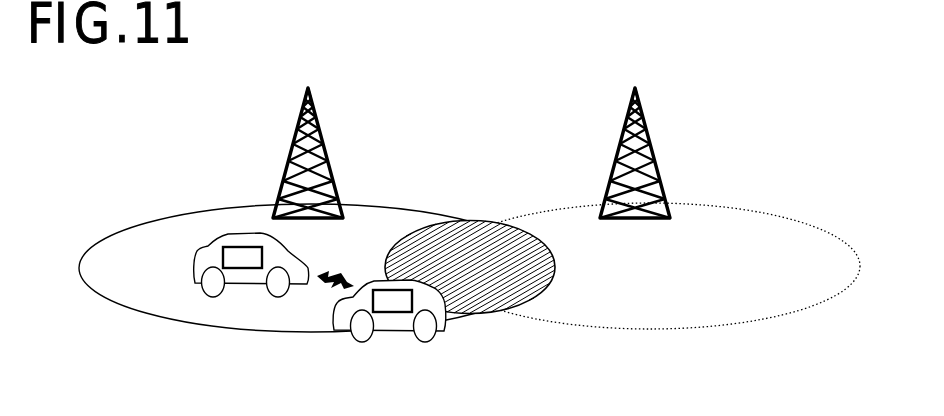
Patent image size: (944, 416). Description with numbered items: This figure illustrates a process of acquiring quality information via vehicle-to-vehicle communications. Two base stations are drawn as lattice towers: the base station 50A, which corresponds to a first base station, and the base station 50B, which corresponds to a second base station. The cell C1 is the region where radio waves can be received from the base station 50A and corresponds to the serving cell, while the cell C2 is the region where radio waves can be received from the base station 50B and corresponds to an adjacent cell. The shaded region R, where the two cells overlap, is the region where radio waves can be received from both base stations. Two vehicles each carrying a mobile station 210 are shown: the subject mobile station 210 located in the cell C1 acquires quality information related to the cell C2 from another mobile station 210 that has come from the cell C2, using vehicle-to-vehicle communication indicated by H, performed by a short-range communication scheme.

The cell C1 is at (153, 218).
The cell C2 is at (762, 212).
The shaded region R is at (483, 238).
The base station 50A is at (309, 86).
The base station 50B is at (636, 86).
The mobile station 210 is at (240, 256).
The vehicle-to-vehicle communication H is at (313, 293).